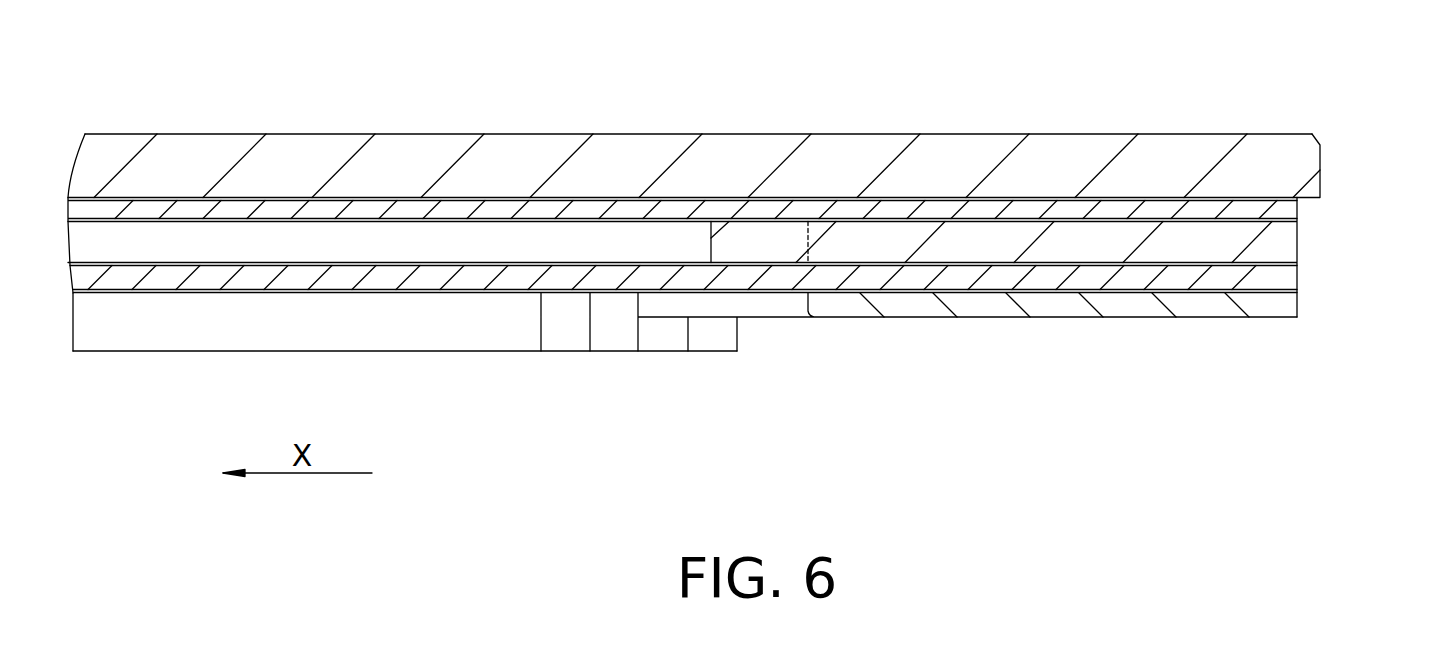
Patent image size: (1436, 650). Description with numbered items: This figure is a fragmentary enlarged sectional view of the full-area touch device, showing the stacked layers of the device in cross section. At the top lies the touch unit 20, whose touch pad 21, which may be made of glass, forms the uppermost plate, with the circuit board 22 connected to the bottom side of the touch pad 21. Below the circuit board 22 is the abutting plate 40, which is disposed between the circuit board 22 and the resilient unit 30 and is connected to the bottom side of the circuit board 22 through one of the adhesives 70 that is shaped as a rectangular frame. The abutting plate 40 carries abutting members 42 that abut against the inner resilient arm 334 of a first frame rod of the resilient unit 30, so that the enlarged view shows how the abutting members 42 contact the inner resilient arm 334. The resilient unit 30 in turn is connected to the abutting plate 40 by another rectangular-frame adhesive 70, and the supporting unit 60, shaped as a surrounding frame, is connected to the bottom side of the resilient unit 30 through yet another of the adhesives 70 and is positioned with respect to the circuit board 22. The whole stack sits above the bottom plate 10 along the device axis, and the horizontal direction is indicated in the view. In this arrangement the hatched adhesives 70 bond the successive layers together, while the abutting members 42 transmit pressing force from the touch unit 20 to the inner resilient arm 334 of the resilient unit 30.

The bottom plate 10 is at (613, 352).
The touch unit 20 is at (850, 134).
The touch pad 21 is at (944, 140).
The circuit board 22 is at (1290, 212).
The resilient unit 30 is at (1293, 282).
The inner resilient arm 334 is at (470, 280).
The abutting plate 40 is at (1293, 247).
The abutting members 42 is at (743, 243).
The supporting unit 60 is at (925, 317).
The adhesives 70 is at (995, 261).